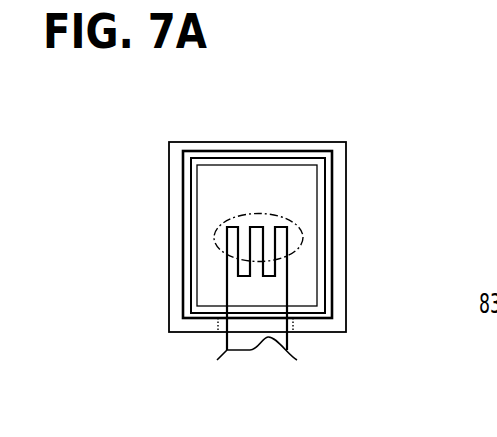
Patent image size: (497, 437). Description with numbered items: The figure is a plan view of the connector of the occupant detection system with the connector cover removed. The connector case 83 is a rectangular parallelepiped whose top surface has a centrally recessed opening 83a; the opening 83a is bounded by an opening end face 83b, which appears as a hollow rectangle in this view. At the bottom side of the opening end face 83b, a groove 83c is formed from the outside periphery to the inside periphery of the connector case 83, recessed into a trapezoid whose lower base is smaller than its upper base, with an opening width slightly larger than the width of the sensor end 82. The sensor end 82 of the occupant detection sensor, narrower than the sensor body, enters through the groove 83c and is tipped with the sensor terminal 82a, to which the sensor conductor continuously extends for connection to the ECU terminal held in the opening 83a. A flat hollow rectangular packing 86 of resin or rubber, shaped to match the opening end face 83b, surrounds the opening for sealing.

The sensor end 82 is at (268, 297).
The sensor terminal 82a is at (290, 217).
The connector case 83 is at (170, 290).
The opening 83a is at (248, 195).
The opening end face 83b is at (340, 175).
The groove 83c is at (223, 327).
The packing 86 is at (184, 222).